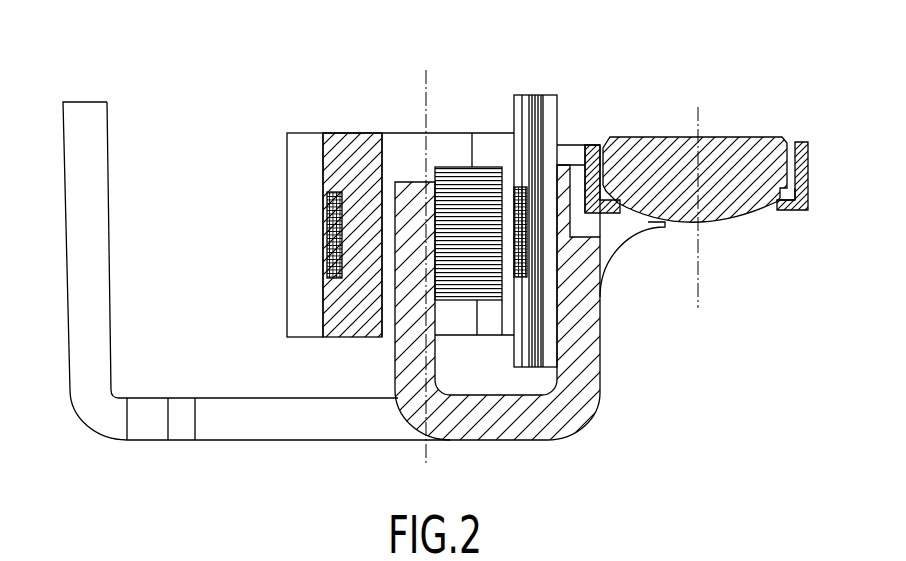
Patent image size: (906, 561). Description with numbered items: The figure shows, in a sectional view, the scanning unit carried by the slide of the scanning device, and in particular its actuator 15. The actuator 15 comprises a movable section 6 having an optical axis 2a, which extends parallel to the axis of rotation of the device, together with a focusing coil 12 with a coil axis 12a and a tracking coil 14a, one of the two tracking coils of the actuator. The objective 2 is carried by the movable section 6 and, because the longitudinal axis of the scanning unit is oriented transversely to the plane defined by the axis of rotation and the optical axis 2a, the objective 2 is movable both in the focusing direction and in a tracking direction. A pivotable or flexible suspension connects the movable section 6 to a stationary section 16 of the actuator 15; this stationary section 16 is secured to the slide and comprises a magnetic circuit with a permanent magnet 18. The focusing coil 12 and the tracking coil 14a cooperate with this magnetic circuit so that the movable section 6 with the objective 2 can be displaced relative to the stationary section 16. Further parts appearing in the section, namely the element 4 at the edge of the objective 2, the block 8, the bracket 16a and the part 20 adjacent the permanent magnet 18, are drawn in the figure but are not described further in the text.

The objective 2 is at (747, 198).
The optical axis 2a is at (698, 290).
The lens retaining ring 4 is at (808, 172).
The movable section 6 is at (568, 150).
The magnet block 8 is at (356, 148).
The focusing coil 12 is at (330, 223).
The coil axis 12a is at (425, 95).
The tracking coil 14a is at (533, 95).
The actuator 15 is at (643, 394).
The stationary section 16 is at (287, 427).
The holding bracket 16a is at (566, 183).
The permanent magnet 18 is at (452, 182).
The yoke 20 is at (506, 187).